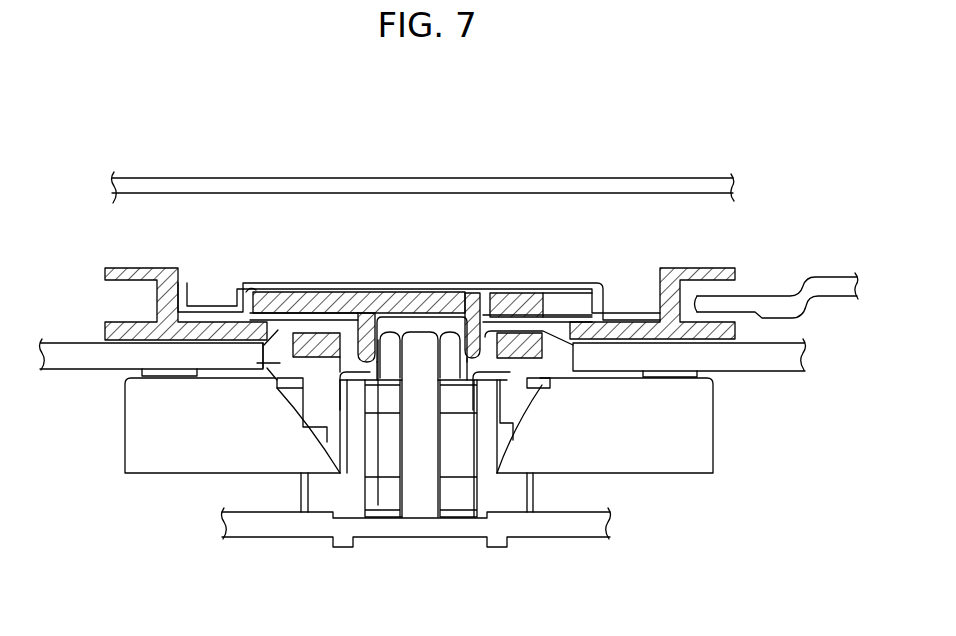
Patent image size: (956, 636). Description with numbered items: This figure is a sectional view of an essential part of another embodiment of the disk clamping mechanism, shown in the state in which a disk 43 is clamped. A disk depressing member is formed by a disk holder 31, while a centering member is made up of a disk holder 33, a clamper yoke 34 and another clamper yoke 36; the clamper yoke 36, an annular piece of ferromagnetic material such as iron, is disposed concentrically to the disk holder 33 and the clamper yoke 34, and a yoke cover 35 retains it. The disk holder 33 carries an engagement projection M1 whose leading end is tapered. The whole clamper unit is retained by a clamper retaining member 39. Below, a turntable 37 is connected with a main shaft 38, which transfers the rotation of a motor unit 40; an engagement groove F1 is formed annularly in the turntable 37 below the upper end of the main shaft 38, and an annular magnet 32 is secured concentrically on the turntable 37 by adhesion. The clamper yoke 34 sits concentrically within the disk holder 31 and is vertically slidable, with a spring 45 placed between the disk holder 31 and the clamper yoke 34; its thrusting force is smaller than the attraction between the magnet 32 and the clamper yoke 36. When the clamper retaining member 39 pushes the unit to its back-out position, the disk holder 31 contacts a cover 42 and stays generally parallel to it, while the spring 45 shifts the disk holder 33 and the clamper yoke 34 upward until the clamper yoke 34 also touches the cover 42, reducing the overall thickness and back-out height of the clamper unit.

The cover 42 is at (241, 191).
The spring 45 is at (254, 287).
The clamper yoke 34 is at (575, 286).
The disk holder 33 is at (468, 297).
The clamper yoke 36 is at (517, 307).
The yoke cover 35 is at (277, 332).
The engagement projection M1 is at (372, 350).
The main shaft 38 is at (430, 507).
The engagement groove F1 is at (379, 505).
The magnet 32 is at (320, 347).
The turntable 37 is at (278, 363).
The disk 43 is at (757, 364).
The motor unit 40 is at (670, 458).
The disk holder 31 is at (700, 272).
The clamper retaining member 39 is at (773, 303).